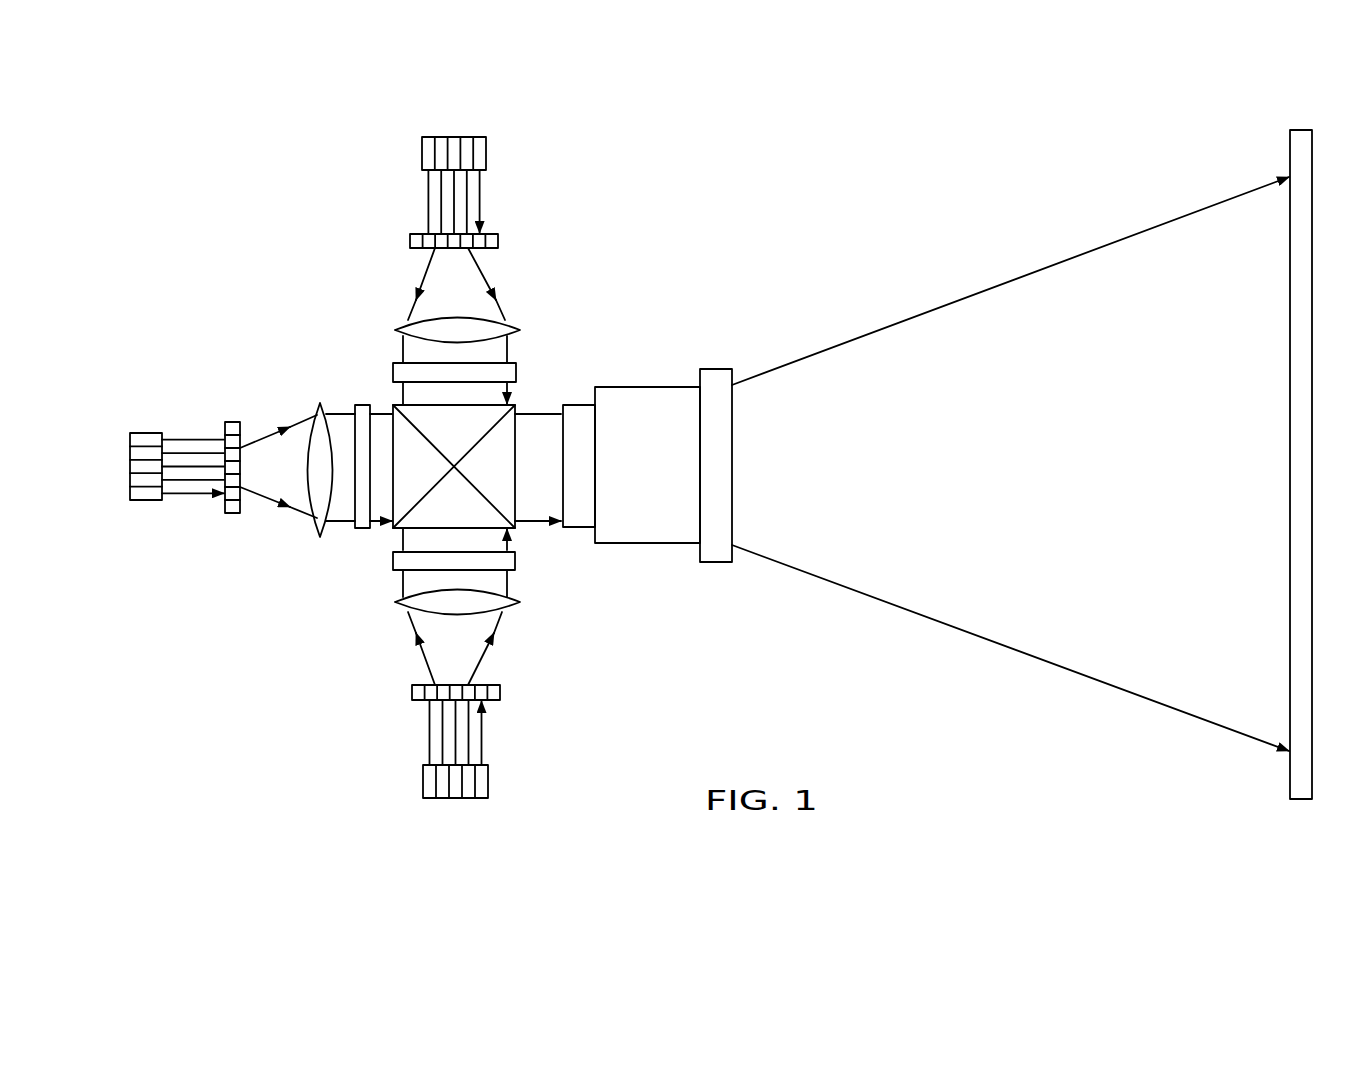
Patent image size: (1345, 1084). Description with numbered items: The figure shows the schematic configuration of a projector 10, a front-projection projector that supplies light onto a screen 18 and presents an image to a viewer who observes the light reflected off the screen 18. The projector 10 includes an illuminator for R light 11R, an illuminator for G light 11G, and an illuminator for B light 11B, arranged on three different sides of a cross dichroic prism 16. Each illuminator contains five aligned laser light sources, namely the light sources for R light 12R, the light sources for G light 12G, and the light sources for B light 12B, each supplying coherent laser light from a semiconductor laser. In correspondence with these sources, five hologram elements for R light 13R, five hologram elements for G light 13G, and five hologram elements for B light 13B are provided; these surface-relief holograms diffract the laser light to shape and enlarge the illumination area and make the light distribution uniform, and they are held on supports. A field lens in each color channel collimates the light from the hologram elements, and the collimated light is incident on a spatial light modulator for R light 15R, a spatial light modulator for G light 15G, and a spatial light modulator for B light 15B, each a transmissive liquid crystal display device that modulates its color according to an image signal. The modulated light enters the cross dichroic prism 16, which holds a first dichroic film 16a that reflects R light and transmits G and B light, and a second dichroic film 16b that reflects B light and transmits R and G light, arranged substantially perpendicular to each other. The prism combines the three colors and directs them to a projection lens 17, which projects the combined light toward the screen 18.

The projector 10 is at (287, 97).
The illuminator for R light 11R is at (315, 137).
The illuminator for G light 11G is at (312, 578).
The illuminator for B light 11B is at (585, 630).
The light source for R light 12R is at (422, 157).
The light source for G light 12G is at (147, 500).
The light source for B light 12B is at (488, 782).
The hologram element for R light 13R is at (424, 237).
The hologram element for G light 13G is at (226, 513).
The hologram element for B light 13B is at (500, 696).
The spatial light modulator for R light 15R is at (516, 373).
The spatial light modulator for G light 15G is at (362, 405).
The spatial light modulator for B light 15B is at (400, 556).
The cross dichroic prism 16 is at (393, 528).
The first dichroic film 16a is at (500, 505).
The second dichroic film 16b is at (500, 430).
The projection lens 17 is at (716, 380).
The screen 18 is at (1302, 135).